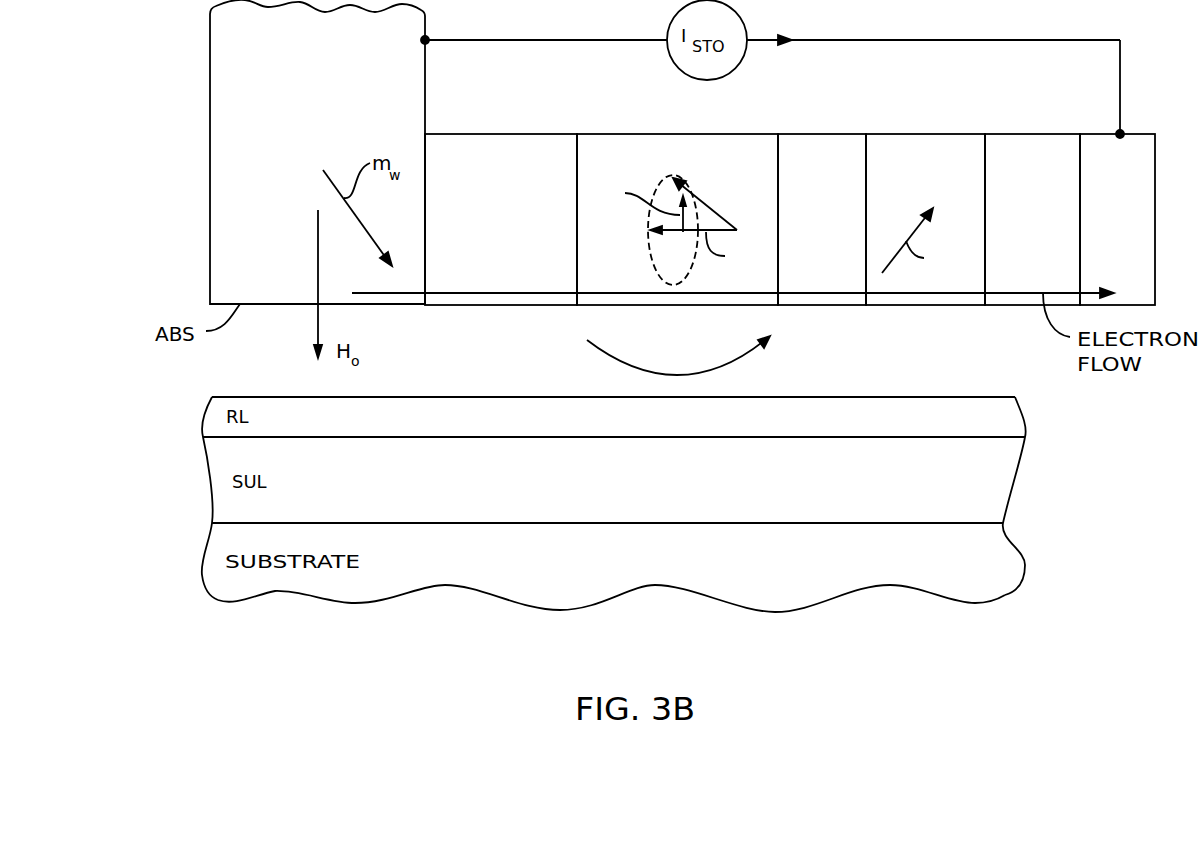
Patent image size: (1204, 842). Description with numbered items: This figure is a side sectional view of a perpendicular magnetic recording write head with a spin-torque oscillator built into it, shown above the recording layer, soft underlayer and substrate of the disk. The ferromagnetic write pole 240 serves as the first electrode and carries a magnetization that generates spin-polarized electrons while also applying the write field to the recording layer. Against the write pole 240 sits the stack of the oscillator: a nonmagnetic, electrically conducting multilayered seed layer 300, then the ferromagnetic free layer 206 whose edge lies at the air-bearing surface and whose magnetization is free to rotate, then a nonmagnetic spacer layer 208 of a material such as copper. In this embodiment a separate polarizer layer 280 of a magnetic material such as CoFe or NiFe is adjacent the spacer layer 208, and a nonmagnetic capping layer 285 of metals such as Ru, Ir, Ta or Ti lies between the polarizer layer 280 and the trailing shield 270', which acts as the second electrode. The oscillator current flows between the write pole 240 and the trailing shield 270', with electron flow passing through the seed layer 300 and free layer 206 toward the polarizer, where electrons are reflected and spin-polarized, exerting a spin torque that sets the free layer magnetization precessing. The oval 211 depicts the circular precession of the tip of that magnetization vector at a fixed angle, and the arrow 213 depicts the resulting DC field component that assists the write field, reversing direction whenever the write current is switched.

The write pole 240 is at (224, 102).
The seed layer 300 is at (503, 134).
The free layer 206 is at (636, 134).
The spacer layer 208 is at (806, 134).
The polarizer layer 280 is at (906, 134).
The capping layer 285 is at (1021, 134).
The trailing shield 270' is at (1095, 199).
The oval 211 is at (648, 242).
The DC field component arrow 213 is at (621, 360).